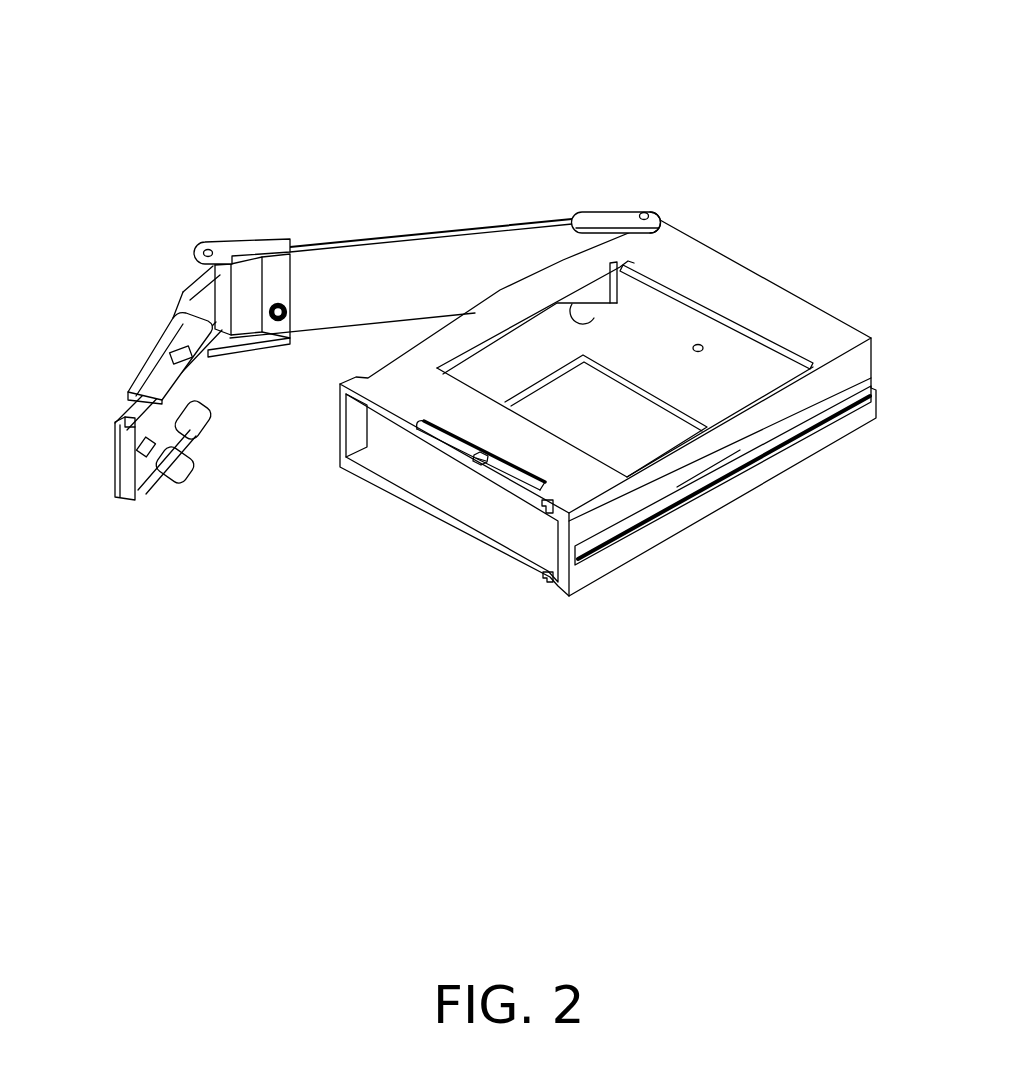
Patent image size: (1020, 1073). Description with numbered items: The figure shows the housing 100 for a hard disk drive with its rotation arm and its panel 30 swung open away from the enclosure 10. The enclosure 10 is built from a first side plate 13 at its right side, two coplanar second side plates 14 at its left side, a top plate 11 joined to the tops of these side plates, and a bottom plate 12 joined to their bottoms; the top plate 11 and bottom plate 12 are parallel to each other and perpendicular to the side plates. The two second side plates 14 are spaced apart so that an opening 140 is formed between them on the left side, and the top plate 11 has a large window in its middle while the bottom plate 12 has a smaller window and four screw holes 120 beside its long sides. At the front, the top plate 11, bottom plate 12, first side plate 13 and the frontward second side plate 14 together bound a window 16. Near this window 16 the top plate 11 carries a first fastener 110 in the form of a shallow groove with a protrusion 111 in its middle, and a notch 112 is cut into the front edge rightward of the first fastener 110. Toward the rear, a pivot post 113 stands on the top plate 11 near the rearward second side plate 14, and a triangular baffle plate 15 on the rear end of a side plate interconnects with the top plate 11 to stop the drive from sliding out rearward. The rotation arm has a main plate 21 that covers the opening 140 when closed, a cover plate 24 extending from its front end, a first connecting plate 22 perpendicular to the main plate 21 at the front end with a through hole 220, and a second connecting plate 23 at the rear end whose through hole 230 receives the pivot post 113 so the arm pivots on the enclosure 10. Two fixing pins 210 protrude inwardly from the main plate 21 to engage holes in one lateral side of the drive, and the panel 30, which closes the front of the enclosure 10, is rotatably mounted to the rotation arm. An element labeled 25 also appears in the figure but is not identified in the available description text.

The housing 100 is at (382, 80).
The enclosure 10 is at (914, 322).
The top plate 11 is at (762, 303).
The bottom plate 12 is at (758, 363).
The first side plate 13 is at (845, 368).
The second side plate 14 is at (633, 282).
The baffle plate 15 is at (676, 289).
The window 16 is at (390, 470).
The first fastener 110 is at (452, 442).
The protrusion 111 is at (480, 465).
The notch 112 is at (547, 503).
The pivot post 113 is at (646, 213).
The screw hole 120 is at (700, 350).
The opening 140 is at (530, 340).
The main plate 21 is at (380, 260).
The first connecting plate 22 is at (238, 246).
The second connecting plate 23 is at (580, 217).
The cover plate 24 is at (248, 292).
The pivot pin 25 is at (225, 302).
The panel 30 is at (150, 375).
The fixing pin 210 is at (278, 323).
The through hole 220 is at (208, 249).
The through hole 230 is at (656, 221).